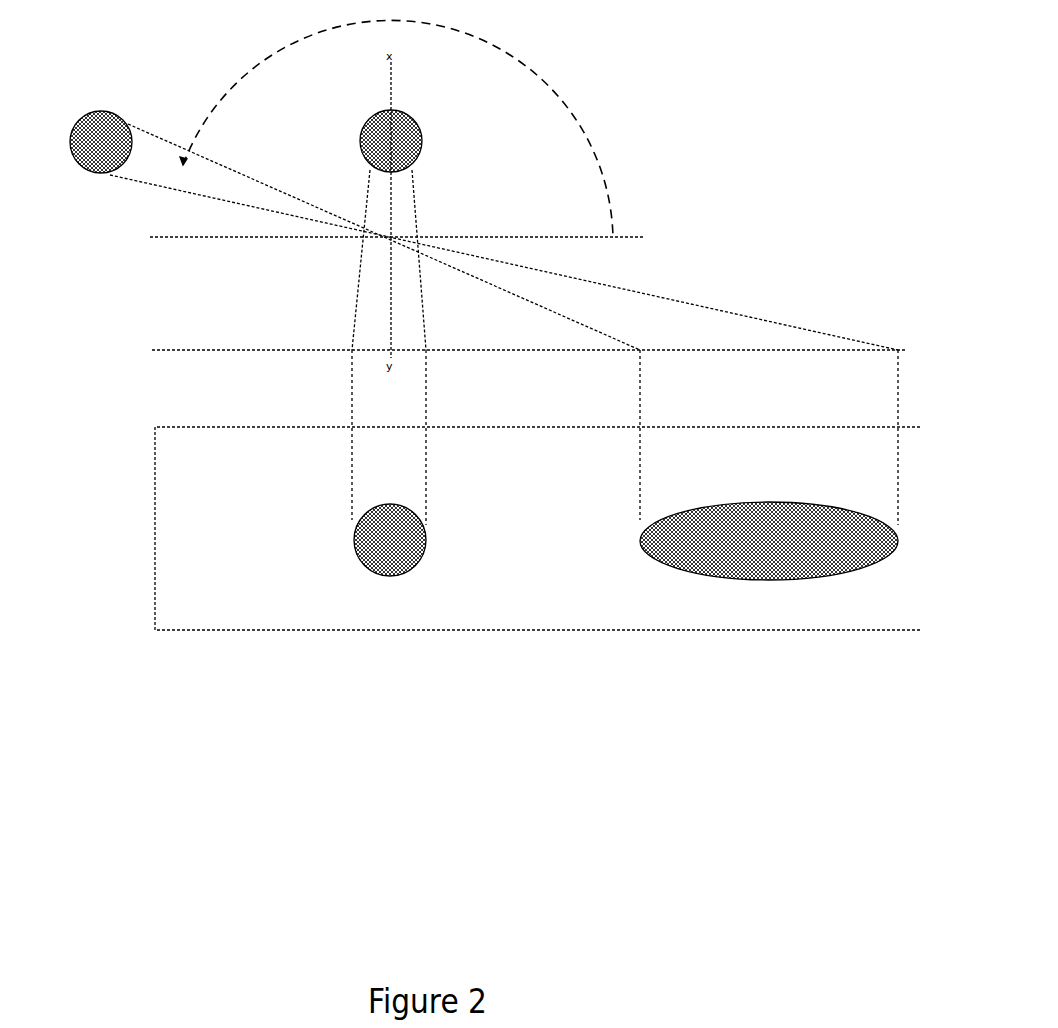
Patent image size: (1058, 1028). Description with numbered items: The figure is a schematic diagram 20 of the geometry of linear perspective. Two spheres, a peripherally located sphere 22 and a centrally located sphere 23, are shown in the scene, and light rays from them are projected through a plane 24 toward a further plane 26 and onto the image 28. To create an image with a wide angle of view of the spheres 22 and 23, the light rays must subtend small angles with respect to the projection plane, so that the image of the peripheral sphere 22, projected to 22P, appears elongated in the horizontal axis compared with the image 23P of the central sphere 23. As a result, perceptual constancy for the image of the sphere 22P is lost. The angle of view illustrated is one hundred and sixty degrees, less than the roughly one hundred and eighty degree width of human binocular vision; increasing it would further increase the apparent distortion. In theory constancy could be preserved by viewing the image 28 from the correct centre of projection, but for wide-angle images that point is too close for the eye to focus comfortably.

The schematic diagram 20 is at (186, 88).
The peripherally located sphere 22 is at (463, 230).
The centrally located sphere 23 is at (368, 230).
The lens plane 24 is at (374, 245).
The image plane 26 is at (505, 353).
The image 28 is at (511, 528).
The image of on-axis object 23P is at (358, 463).
The image of the sphere 22P is at (736, 465).